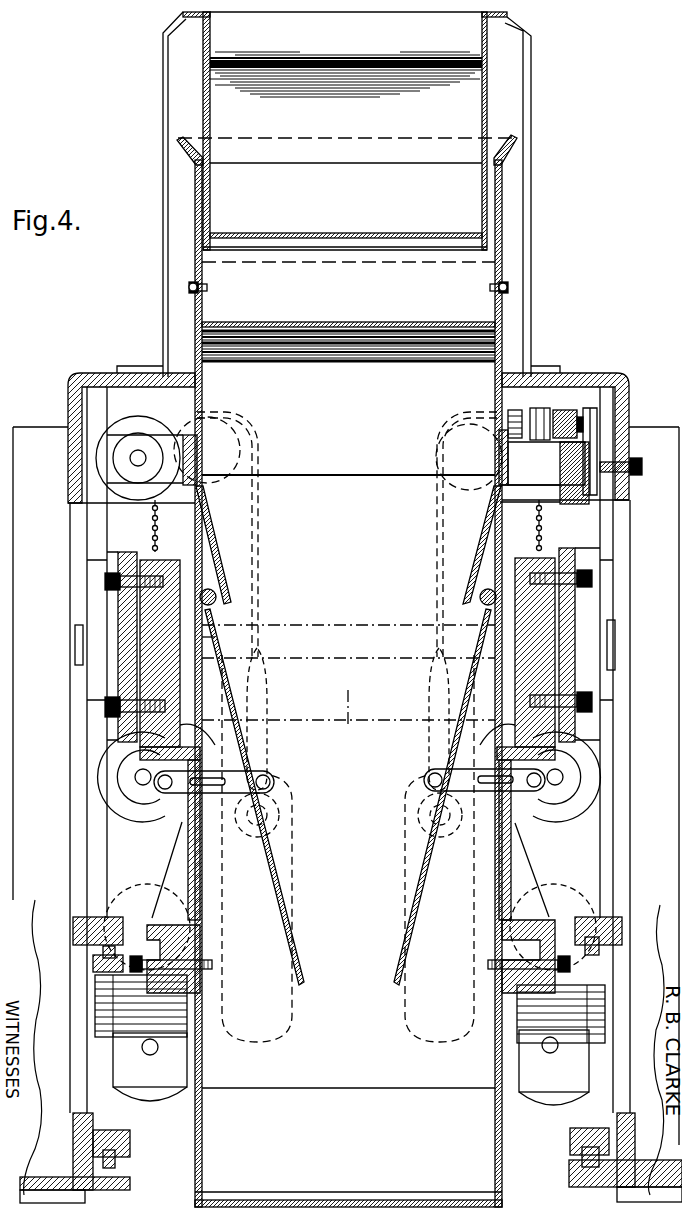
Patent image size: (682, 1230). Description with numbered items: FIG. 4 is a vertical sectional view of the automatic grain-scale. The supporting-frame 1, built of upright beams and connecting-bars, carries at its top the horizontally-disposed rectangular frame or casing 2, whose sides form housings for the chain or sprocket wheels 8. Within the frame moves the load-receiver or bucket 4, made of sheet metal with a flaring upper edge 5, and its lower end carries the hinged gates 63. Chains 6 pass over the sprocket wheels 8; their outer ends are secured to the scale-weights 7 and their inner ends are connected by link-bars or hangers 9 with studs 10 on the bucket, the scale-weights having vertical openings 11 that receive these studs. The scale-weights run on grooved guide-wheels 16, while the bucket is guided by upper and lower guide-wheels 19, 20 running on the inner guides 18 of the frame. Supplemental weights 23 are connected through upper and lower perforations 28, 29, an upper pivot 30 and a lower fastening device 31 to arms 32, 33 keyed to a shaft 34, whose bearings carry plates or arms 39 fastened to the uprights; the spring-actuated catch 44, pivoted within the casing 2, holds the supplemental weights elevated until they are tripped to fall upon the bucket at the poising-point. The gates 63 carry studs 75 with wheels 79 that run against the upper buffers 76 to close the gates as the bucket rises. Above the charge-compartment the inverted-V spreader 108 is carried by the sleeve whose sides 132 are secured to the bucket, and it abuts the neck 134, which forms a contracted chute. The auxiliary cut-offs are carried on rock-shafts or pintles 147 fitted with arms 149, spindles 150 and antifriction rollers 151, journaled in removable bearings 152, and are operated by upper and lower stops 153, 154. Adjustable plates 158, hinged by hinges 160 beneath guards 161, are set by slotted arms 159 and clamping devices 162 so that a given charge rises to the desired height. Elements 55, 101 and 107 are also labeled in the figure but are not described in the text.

The supporting-frame 1 is at (598, 742).
The rectangular frame or casing 2 is at (88, 375).
The load-receiver or bucket 4 is at (193, 251).
The flaring upper edge 5 is at (178, 150).
The chains 6 is at (540, 528).
The scale-weights 7 is at (348, 675).
The chain or sprocket wheels 8 is at (250, 445).
The link-bars or hangers 9 is at (432, 702).
The projections or studs 10 is at (418, 812).
The vertical openings 11 is at (405, 840).
The grooved guide-wheels 16 is at (555, 1100).
The inner guides 18 is at (614, 700).
The upper guide-wheels 19 is at (143, 425).
The lower guide-wheels 20 is at (565, 512).
The supplemental weights 23 is at (572, 556).
The upper perforations 28 is at (515, 572).
The lower perforations 29 is at (347, 722).
The upper pivot 30 is at (592, 578).
The lower fastening device 31 is at (592, 705).
The arm 32 is at (118, 556).
The arm 33 is at (578, 548).
The shaft 34 is at (215, 637).
The plates or arms 39 is at (615, 628).
The spring-actuated catch 44 is at (570, 1142).
The cam disc 55 is at (510, 757).
The hinged gates 63 is at (347, 1045).
The projecting studs 75 is at (545, 1045).
The upper buffers or stops 76 is at (560, 907).
The wheels 79 is at (582, 1045).
The bottom plate 101 is at (395, 232).
The drum wall 107 is at (205, 97).
The spreader 108 is at (358, 324).
The sides 132 is at (490, 295).
The neck 134 is at (346, 408).
The rock-shafts or pintles 147 is at (496, 435).
The arms 149 is at (548, 400).
The pivots or spindles 150 is at (597, 412).
The antifriction wheels or rollers 151 is at (565, 410).
The bearings 152 is at (508, 410).
The upper stops 153 is at (583, 420).
The lower stops 154 is at (590, 500).
The adjustable plates 158 is at (395, 915).
The slotted arms 159 is at (468, 800).
The hinges 160 is at (480, 600).
The guards 161 is at (480, 540).
The clamping devices 162 is at (545, 792).